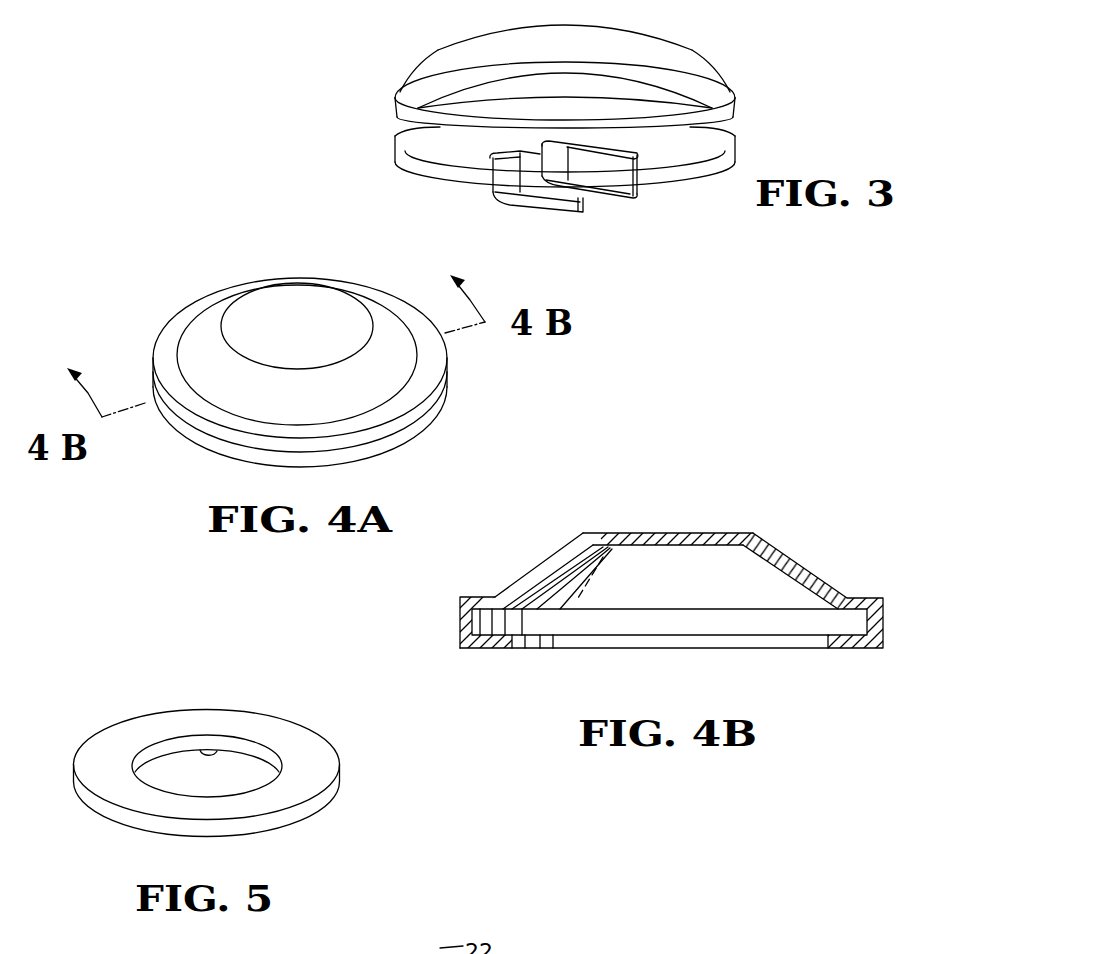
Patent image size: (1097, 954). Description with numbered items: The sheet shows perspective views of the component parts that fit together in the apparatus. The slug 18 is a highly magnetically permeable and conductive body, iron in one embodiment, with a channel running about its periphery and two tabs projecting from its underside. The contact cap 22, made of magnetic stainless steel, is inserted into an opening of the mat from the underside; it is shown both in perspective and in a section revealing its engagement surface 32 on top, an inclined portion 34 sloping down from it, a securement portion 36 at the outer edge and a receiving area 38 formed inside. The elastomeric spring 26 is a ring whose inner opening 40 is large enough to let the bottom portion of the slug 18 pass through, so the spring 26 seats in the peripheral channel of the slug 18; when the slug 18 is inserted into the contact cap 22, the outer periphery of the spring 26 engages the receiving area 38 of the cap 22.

In FIG. 3, the slug 18 is at (728, 88).
In FIG. 4A, the contact cap 22 is at (221, 289).
In FIG. 4B, the contact cap 22 is at (634, 601).
In FIG. 5, the elastomeric spring 26 is at (244, 759).
In FIG. 4B, the engagement surface 32 is at (723, 533).
In FIG. 4B, the inclined portion 34 is at (785, 557).
In FIG. 4B, the securement portion 36 is at (459, 637).
In FIG. 4B, the receiving area 38 is at (497, 636).
In FIG. 5, the inner opening 40 is at (193, 748).